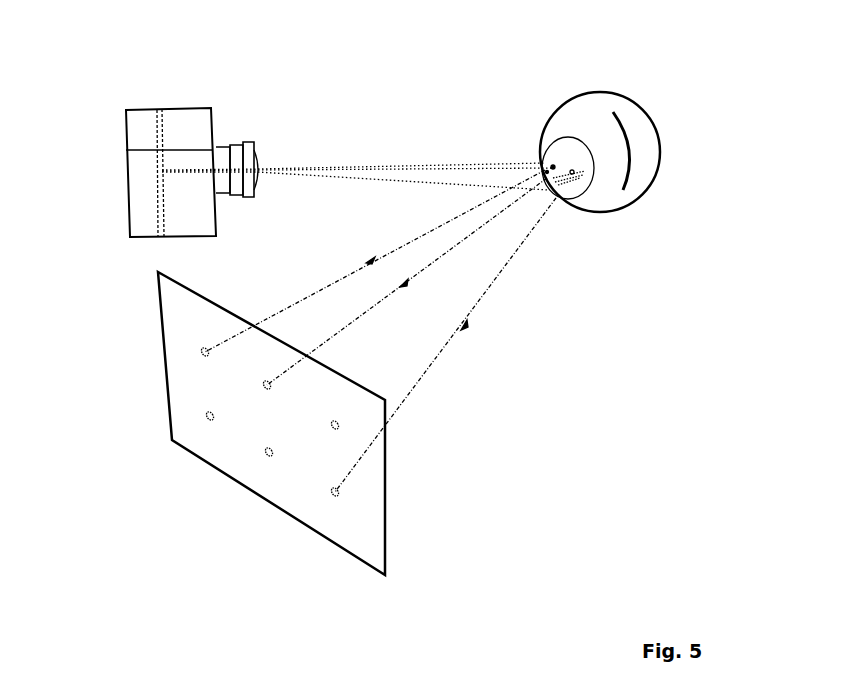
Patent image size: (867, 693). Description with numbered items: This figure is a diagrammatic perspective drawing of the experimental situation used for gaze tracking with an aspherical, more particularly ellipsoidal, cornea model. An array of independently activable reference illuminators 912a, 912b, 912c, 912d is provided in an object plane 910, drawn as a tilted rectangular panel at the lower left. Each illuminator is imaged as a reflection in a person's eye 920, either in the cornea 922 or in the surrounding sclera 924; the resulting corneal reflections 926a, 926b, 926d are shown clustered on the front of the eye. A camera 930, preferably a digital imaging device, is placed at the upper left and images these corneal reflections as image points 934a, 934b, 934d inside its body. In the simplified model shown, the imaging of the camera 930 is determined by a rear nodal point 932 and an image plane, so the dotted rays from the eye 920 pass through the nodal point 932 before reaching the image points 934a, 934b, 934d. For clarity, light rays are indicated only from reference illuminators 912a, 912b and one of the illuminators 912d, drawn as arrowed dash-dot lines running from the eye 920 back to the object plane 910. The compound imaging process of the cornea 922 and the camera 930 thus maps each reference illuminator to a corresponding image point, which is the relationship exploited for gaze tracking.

The camera 930 is at (253, 77).
The nodal point 932 is at (238, 169).
The image point 934a is at (162, 172).
The image point 934b is at (162, 170).
The image point 934d is at (162, 169).
The eye 920 is at (683, 194).
The sclera 924 is at (622, 206).
The cornea 922 is at (550, 200).
The corneal reflection 926a is at (549, 165).
The corneal reflection 926b is at (553, 164).
The corneal reflection 926d is at (573, 190).
The object plane 910 is at (357, 560).
The reference illuminator 912a is at (203, 352).
The reference illuminator 912b is at (263, 386).
The reference illuminator 912c is at (340, 430).
The reference illuminator 912d is at (333, 496).